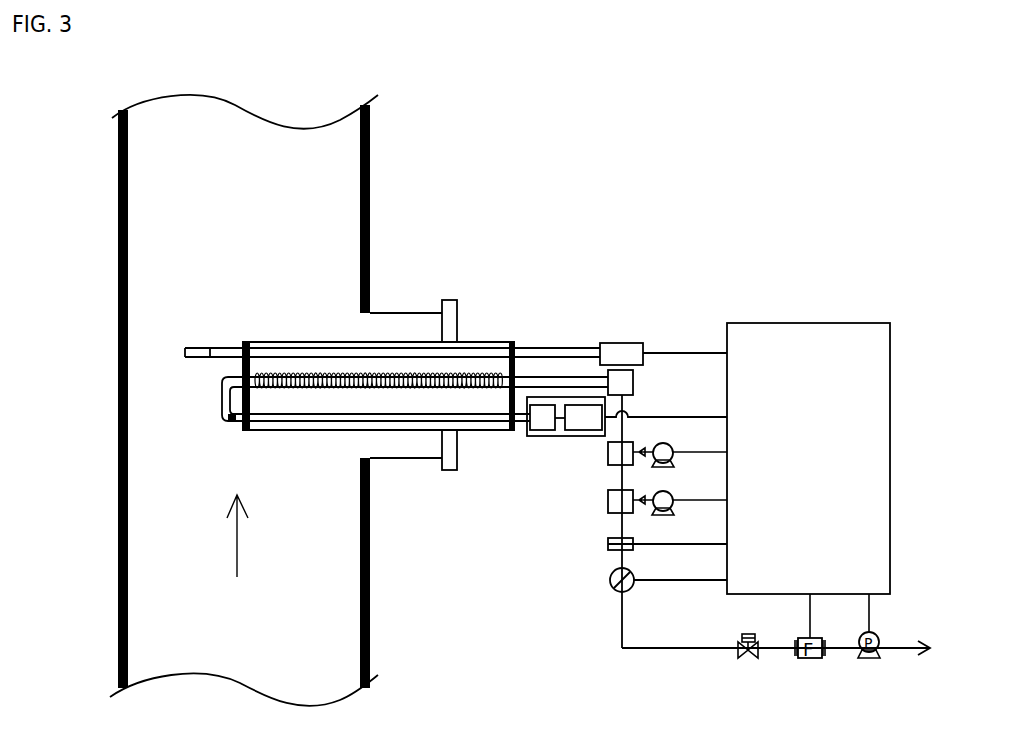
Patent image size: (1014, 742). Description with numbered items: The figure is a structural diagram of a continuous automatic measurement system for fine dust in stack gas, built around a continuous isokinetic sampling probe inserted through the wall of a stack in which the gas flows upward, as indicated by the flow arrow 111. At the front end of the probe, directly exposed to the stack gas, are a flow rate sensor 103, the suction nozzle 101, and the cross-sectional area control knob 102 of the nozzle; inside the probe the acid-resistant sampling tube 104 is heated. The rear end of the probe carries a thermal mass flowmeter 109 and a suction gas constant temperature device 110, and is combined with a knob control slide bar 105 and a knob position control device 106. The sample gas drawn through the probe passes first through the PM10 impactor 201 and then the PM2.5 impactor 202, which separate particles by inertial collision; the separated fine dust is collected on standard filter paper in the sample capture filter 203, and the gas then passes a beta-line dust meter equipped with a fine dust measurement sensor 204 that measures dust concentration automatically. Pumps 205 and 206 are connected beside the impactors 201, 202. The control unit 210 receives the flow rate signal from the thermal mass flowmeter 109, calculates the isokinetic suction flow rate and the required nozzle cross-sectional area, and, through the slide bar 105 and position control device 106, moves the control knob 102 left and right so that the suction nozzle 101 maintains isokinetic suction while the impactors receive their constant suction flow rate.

The suction nozzle 101 is at (223, 410).
The cross-sectional area control knob 102 is at (232, 420).
The flow rate sensor 103 is at (197, 348).
The sampling tube 104 is at (377, 376).
The knob control slide bar 105 is at (543, 405).
The knob position control device 106 is at (583, 405).
The thermal mass flowmeter 109 is at (617, 343).
The suction gas constant temperature device 110 is at (633, 387).
The exhaust gas flow 111 is at (236, 542).
The PM10 impactor 201 is at (608, 452).
The PM2.5 impactor 202 is at (608, 501).
The sample capture filter 203 is at (608, 543).
The fine dust measurement sensor 204 is at (611, 577).
The first pump 205 is at (673, 443).
The second pump 206 is at (672, 494).
The control unit 210 is at (830, 323).